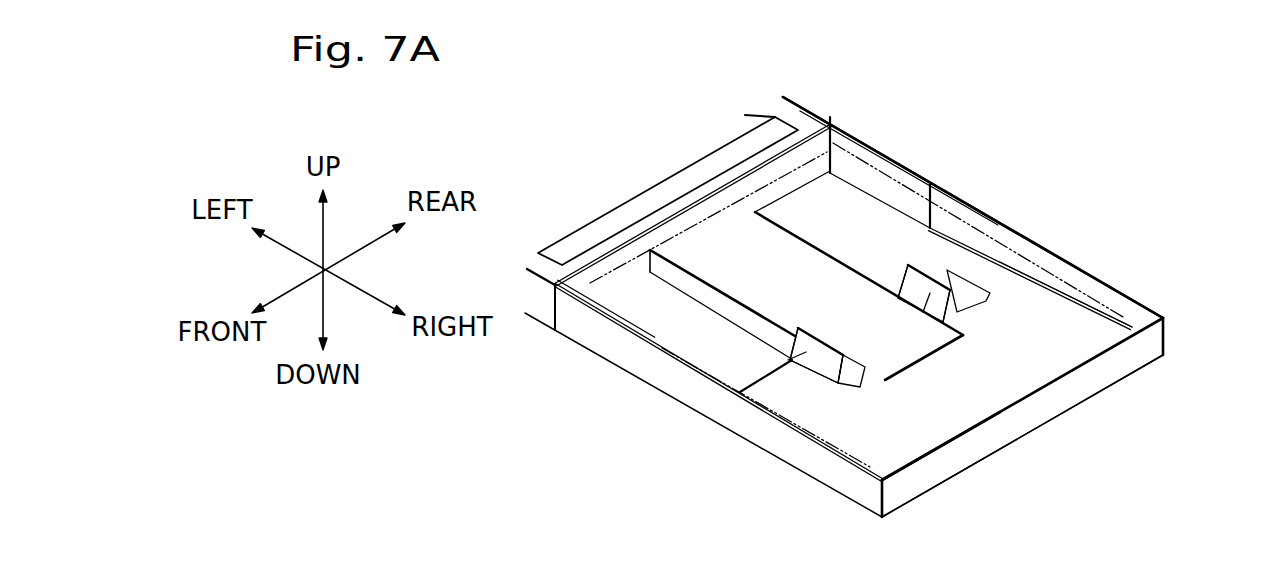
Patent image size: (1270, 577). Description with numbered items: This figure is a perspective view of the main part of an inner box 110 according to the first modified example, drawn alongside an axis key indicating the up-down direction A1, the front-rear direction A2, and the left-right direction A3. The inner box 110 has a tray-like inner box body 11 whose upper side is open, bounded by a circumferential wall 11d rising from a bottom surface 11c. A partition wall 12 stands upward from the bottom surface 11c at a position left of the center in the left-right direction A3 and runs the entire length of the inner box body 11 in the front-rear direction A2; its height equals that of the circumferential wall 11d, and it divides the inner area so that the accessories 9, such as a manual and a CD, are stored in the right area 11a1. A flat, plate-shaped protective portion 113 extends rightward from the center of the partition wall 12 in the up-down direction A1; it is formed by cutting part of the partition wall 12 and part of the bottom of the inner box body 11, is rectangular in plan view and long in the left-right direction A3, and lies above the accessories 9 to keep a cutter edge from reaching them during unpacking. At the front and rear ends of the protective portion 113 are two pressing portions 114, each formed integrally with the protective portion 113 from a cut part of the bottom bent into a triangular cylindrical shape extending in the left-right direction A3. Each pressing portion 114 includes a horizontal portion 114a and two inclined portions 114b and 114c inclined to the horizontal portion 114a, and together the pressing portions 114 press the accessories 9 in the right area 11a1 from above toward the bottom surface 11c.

The accessories 9 is at (983, 237).
The inner box body 11 is at (915, 145).
The partition wall 12 is at (597, 257).
The inner box 110 is at (1170, 174).
The right area 11a1 is at (1135, 313).
The bottom surface 11c is at (913, 443).
The circumferential wall 11d is at (970, 453).
The protective portion 113 is at (757, 341).
The pressing portion 114 is at (668, 552).
The horizontal portion 114a is at (840, 386).
The inclined portion 114b is at (787, 367).
The inclined portion 114c is at (870, 383).
The up-down direction A1 is at (325, 297).
The front-rear direction A2 is at (357, 250).
The left-right direction A3 is at (285, 250).